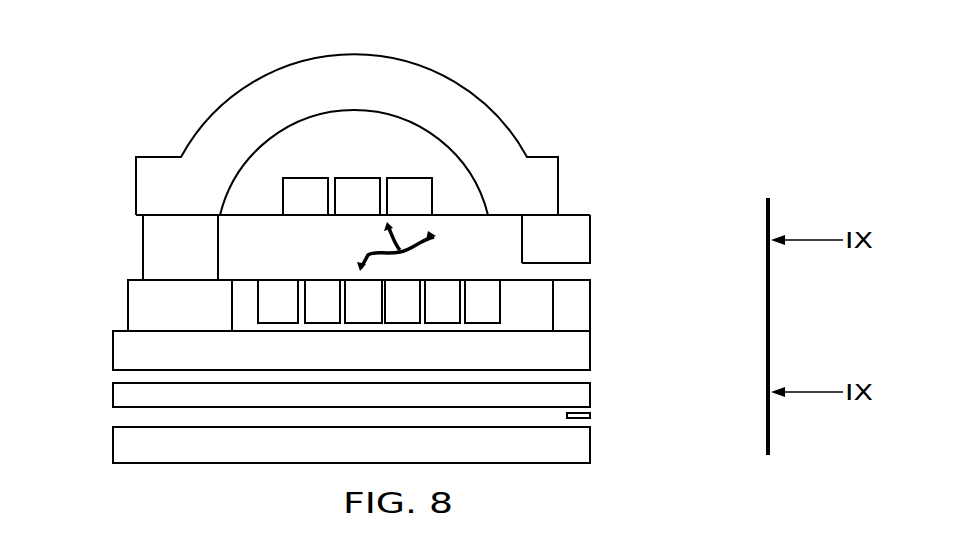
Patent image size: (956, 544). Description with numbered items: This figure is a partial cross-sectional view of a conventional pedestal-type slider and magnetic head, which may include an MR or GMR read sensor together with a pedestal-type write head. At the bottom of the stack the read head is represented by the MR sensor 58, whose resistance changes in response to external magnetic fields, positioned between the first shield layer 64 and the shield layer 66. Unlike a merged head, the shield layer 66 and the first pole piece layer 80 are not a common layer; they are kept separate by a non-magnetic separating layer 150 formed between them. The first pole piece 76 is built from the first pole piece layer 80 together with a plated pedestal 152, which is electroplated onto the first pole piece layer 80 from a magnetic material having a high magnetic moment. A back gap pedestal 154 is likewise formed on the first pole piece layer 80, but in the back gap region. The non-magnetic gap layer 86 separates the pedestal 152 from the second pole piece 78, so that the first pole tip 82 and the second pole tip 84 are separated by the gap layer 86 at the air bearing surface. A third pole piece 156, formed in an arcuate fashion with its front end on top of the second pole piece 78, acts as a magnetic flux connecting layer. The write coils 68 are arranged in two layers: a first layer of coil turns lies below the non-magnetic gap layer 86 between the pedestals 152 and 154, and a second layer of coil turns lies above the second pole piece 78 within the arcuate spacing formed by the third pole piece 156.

The third pole piece 156 is at (490, 106).
The second pole piece 78 is at (577, 215).
The second pole tip 84 is at (590, 233).
The non-magnetic gap layer 86 is at (600, 270).
The first pole tip 82 is at (590, 290).
The plated pedestal 152 is at (578, 307).
The first pole piece layer 80 is at (575, 352).
The first pole piece 76 is at (660, 330).
The non-magnetic separating layer 150 is at (600, 370).
The second shield layer 66 is at (590, 393).
The MR sensor 58 is at (590, 415).
The first shield layer 64 is at (590, 443).
The back gap pedestal 154 is at (128, 303).
The coil layer 68 is at (374, 224).